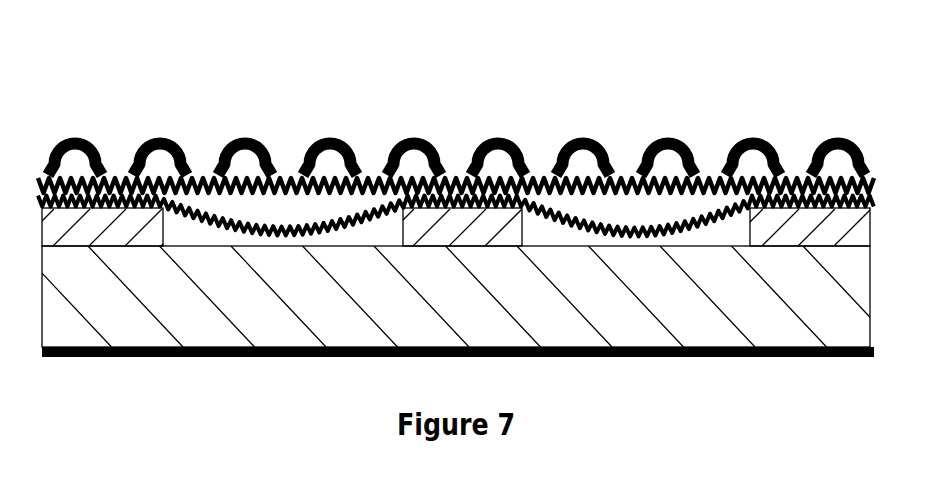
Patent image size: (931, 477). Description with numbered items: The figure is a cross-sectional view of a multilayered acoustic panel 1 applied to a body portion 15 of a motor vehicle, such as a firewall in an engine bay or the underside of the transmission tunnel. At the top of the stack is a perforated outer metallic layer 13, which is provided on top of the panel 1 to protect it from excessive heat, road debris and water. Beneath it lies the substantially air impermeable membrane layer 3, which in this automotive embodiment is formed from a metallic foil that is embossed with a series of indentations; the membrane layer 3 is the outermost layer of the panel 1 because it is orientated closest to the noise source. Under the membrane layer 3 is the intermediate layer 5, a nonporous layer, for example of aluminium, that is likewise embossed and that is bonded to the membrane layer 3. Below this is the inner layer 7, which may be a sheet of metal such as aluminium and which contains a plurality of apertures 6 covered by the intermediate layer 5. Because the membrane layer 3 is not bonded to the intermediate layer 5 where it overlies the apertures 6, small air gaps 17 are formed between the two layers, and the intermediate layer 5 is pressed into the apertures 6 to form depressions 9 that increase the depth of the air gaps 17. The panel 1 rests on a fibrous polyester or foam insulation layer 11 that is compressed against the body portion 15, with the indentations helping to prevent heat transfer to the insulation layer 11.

The multilayered acoustic panel 1 is at (731, 92).
The membrane layer 3 is at (287, 183).
The intermediate layer 5 is at (40, 190).
The apertures 6 is at (718, 233).
The inner layer 7 is at (113, 222).
The depressions 9 is at (330, 222).
The insulation layer 11 is at (157, 300).
The perforated outer metallic layer 13 is at (588, 137).
The body portion 15 is at (813, 357).
The air gaps 17 is at (238, 207).